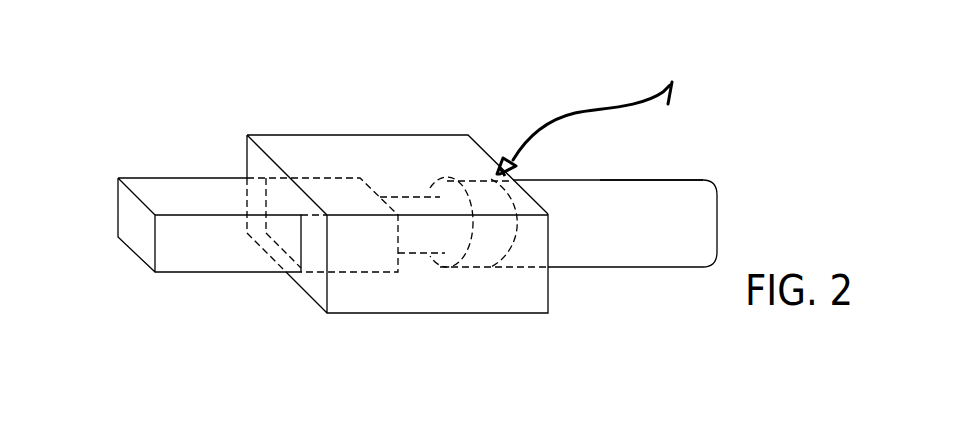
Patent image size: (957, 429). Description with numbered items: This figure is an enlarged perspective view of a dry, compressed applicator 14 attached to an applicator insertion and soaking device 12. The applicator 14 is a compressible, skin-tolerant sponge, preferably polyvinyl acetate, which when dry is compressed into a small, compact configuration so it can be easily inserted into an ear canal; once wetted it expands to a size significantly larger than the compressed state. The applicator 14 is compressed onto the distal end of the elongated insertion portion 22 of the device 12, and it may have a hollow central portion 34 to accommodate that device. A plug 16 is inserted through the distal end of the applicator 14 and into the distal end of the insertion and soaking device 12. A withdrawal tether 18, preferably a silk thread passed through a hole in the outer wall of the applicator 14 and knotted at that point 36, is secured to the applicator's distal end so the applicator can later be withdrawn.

The applicator insertion and soaking device 12 is at (640, 272).
The compressed applicator 14 is at (531, 317).
The plug 16 is at (170, 176).
The withdrawal tether 18 is at (587, 113).
The elongated insertion portion 22 is at (677, 180).
The hollow central portion 34 is at (477, 263).
The connection / solder joint 36 is at (505, 157).